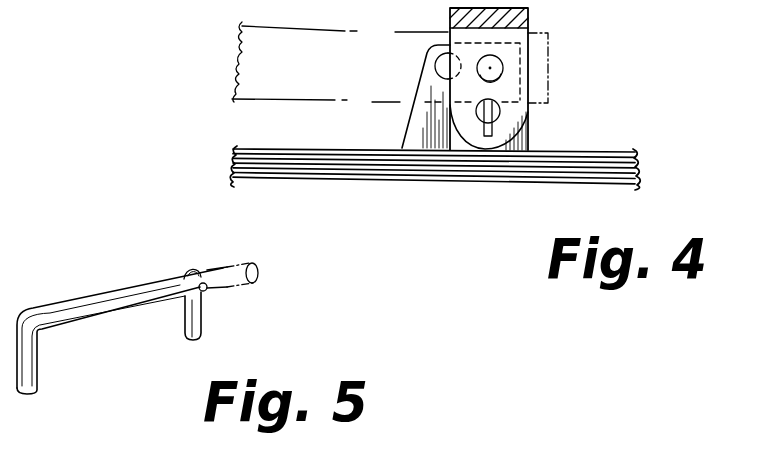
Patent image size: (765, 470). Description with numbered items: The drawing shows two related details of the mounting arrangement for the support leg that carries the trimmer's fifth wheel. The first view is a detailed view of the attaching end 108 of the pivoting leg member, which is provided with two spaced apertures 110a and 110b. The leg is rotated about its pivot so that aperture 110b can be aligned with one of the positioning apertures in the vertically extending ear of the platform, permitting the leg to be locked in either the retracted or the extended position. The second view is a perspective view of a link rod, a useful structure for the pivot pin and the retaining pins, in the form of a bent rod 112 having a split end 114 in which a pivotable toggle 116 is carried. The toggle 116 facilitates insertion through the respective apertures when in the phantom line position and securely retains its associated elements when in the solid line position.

In FIG. 4, the attaching end 108 is at (466, 83).
In FIG. 4, the aperture 110a is at (436, 58).
In FIG. 4, the aperture 110b is at (472, 132).
In FIG. 5, the bent rod 112 is at (90, 295).
In FIG. 5, the split end 114 is at (184, 273).
In FIG. 5, the pivotable toggle 116 is at (203, 320).